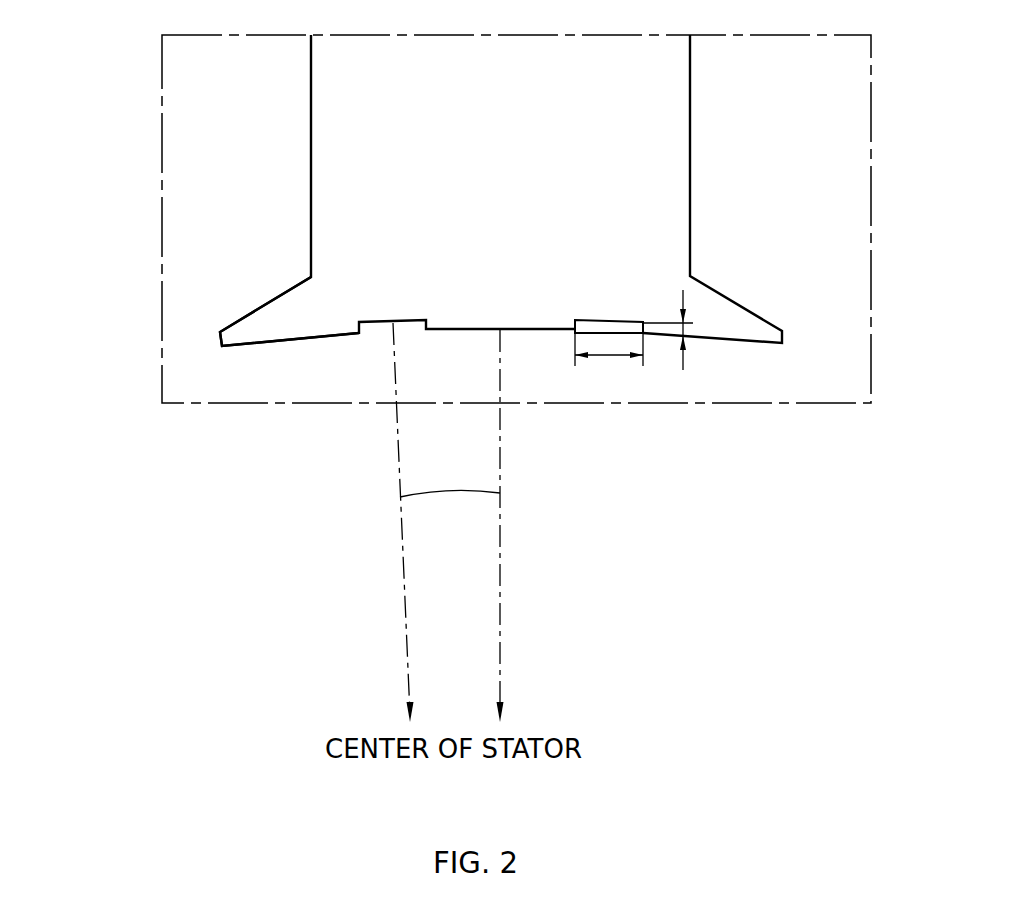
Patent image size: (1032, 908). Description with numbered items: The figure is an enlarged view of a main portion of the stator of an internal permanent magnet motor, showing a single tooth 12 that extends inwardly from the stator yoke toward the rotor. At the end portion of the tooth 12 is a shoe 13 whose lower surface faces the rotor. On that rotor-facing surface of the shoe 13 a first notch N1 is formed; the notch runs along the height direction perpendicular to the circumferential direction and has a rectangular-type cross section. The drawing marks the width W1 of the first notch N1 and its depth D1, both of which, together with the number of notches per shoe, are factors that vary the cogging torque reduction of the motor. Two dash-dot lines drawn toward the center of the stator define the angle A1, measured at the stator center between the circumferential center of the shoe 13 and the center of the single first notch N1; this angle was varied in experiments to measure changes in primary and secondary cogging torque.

The tooth 12 is at (663, 113).
The shoe 13 is at (263, 303).
The first notch N1 is at (615, 320).
The width of first notch W1 is at (609, 360).
The depth of first notch D1 is at (703, 338).
The angle between shoe center and notch center A1 is at (448, 522).